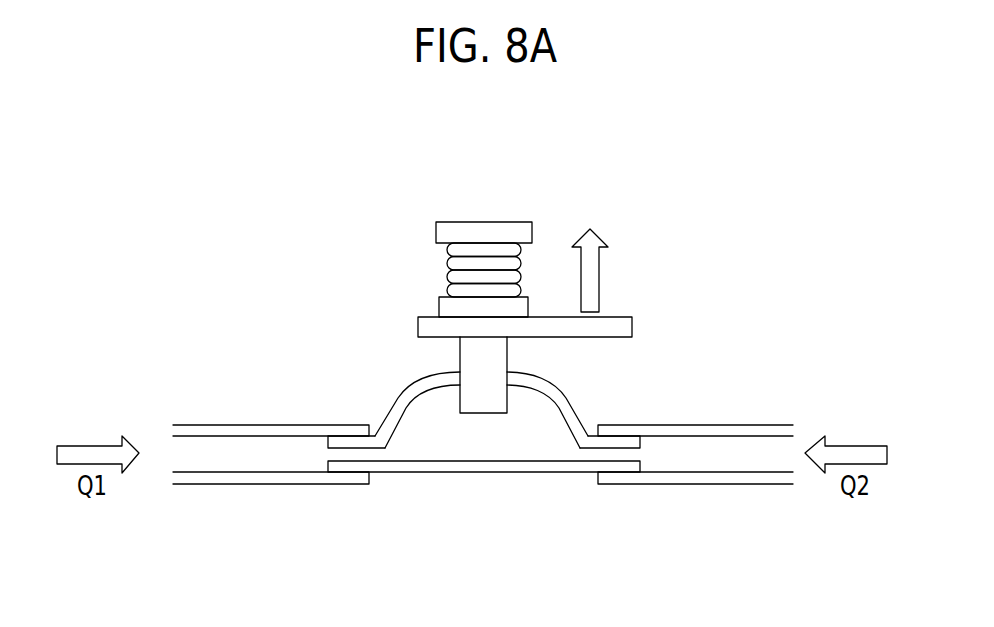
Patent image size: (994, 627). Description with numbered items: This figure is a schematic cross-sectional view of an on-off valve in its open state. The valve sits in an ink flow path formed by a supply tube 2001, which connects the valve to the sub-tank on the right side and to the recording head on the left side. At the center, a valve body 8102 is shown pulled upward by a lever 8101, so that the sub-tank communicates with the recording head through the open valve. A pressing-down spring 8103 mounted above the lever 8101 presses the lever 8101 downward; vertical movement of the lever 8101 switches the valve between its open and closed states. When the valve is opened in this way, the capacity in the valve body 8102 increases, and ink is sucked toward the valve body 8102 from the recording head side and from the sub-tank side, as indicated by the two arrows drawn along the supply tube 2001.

The lever 8101 is at (632, 322).
The valve body 8102 is at (403, 391).
The pressing-down spring 8103 is at (446, 274).
The supply tube 2001 is at (278, 485).